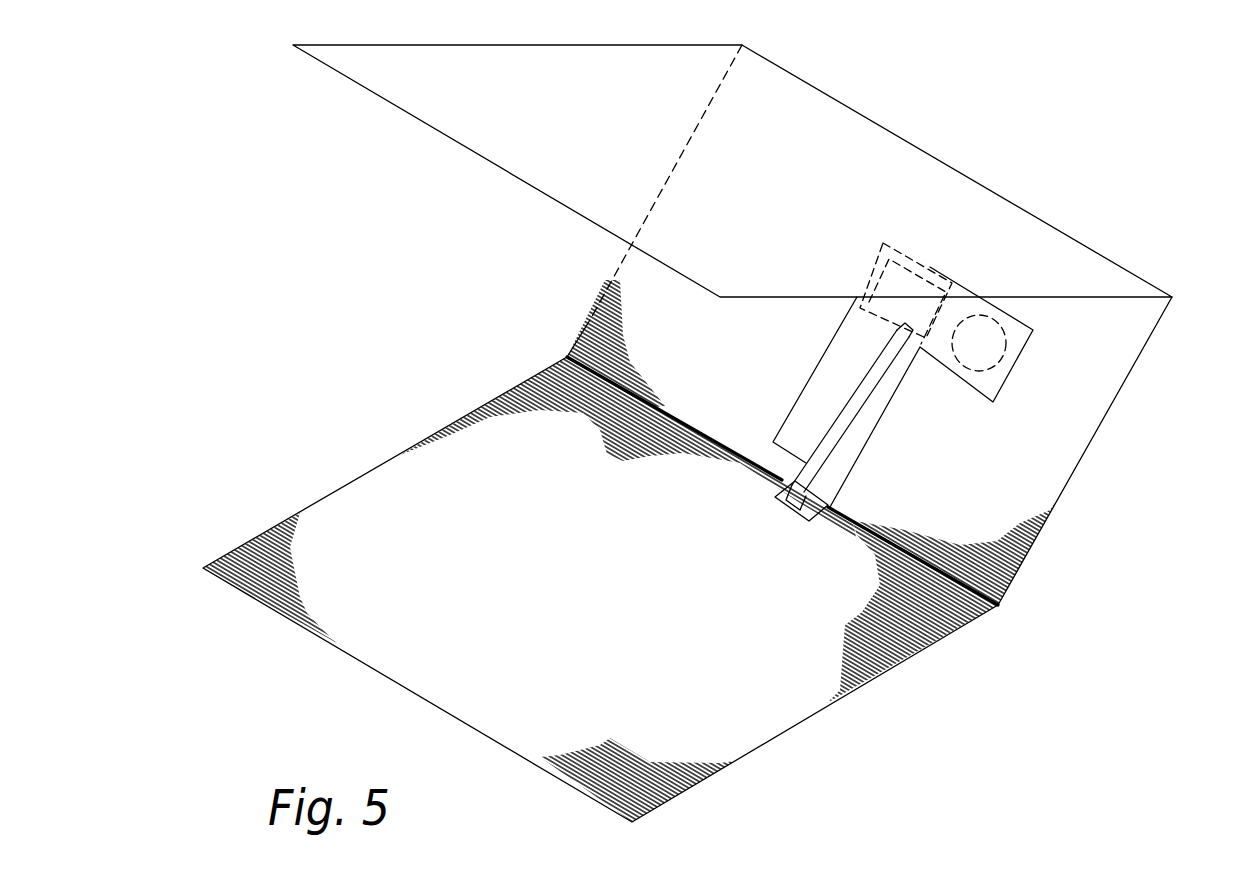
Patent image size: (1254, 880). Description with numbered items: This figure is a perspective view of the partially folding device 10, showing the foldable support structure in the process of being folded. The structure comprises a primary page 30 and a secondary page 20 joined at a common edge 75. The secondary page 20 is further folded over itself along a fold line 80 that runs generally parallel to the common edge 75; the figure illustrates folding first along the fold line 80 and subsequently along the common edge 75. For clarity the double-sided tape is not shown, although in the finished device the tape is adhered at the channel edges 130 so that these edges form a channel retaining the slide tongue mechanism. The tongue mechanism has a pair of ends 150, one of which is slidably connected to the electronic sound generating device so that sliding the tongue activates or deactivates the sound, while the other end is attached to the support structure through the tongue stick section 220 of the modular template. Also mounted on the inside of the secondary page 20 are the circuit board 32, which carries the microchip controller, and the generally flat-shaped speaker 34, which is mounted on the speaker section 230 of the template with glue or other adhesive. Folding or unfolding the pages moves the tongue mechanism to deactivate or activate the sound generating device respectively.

The folding card assembly 10 is at (468, 160).
The secondary page 20 is at (695, 345).
The primary page 30 is at (580, 586).
The circuit board 32 is at (924, 292).
The speaker 34 is at (1003, 329).
The common edge 75 is at (999, 607).
The fold line 80 is at (1174, 297).
The channel edges 130 is at (887, 357).
The ends of slide tongue mechanism 150 is at (797, 498).
The tongue stick section 220 is at (826, 511).
The speaker section 230 is at (1010, 350).